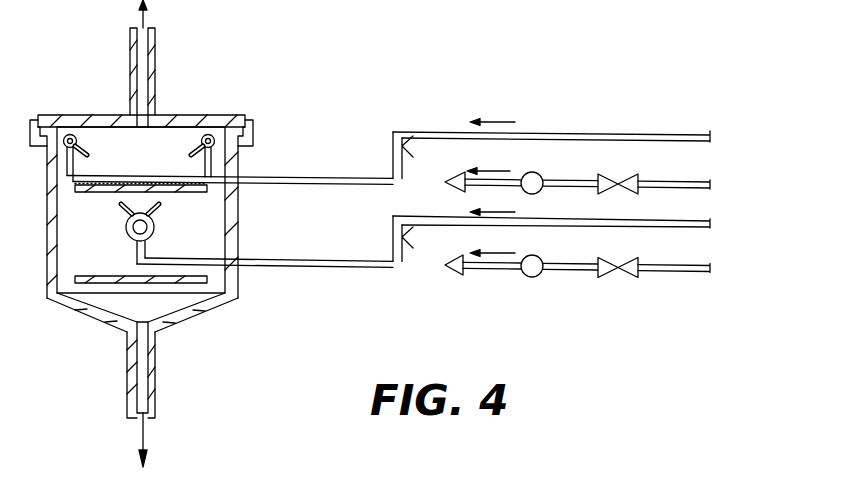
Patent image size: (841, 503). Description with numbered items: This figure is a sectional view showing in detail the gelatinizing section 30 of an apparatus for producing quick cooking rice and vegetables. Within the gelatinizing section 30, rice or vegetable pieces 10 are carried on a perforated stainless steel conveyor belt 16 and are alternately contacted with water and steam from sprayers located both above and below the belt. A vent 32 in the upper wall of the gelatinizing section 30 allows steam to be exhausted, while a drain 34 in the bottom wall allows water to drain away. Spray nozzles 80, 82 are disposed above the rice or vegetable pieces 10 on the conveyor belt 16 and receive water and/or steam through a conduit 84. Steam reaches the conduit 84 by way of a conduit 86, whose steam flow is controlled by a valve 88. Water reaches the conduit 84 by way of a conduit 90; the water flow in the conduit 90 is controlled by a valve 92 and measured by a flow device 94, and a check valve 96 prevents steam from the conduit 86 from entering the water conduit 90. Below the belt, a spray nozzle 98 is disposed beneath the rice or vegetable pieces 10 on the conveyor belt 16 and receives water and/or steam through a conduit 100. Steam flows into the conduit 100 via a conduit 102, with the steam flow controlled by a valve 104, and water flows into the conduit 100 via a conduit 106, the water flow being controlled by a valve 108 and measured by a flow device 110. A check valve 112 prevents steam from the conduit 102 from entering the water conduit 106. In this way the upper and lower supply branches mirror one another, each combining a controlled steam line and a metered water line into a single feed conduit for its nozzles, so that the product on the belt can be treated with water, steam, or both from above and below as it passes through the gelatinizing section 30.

The rice or vegetable pieces 10 is at (207, 187).
The conveyor belt 16 is at (103, 193).
The gelatinizing section 30 is at (239, 167).
The vent 32 is at (156, 70).
The drain 34 is at (156, 385).
The spray nozzle 80 is at (70, 134).
The spray nozzle 82 is at (208, 134).
The conduit 84 is at (338, 176).
The conduit 86 is at (692, 132).
The valve 88 is at (396, 149).
The conduit 90 is at (687, 181).
The valve 92 is at (628, 174).
The flow device 94 is at (535, 173).
The check valve 96 is at (465, 172).
The spray nozzle 98 is at (155, 228).
The conduit 100 is at (283, 268).
The conduit 102 is at (672, 220).
The valve 104 is at (396, 237).
The conduit 106 is at (670, 264).
The valve 108 is at (623, 278).
The flow device 110 is at (527, 278).
The check valve 112 is at (455, 278).